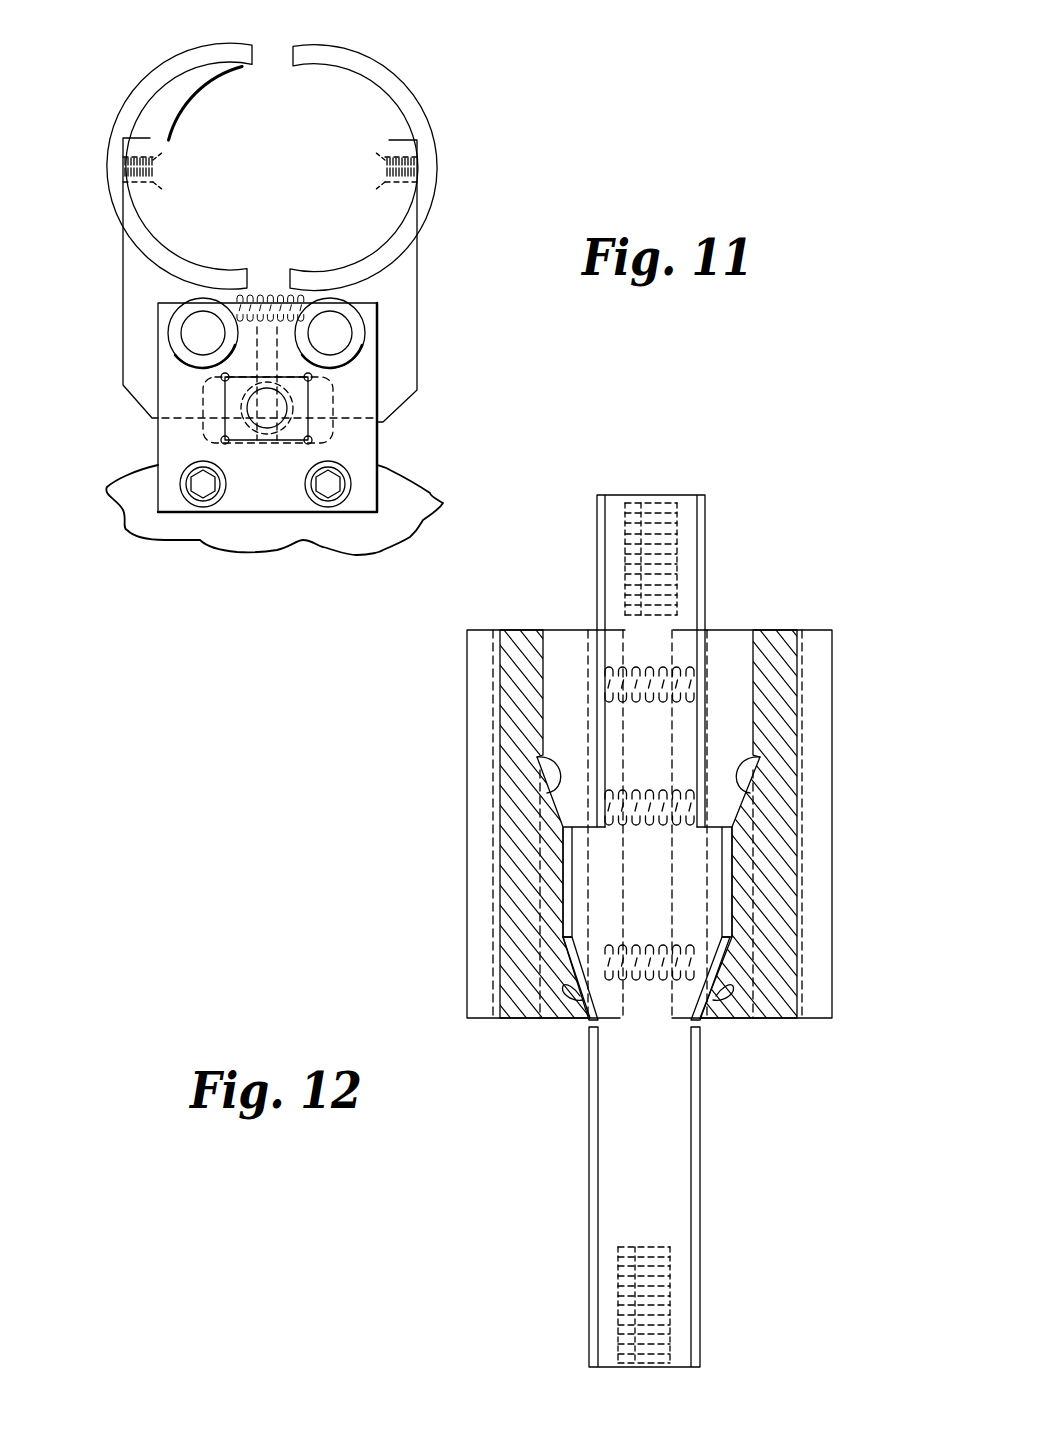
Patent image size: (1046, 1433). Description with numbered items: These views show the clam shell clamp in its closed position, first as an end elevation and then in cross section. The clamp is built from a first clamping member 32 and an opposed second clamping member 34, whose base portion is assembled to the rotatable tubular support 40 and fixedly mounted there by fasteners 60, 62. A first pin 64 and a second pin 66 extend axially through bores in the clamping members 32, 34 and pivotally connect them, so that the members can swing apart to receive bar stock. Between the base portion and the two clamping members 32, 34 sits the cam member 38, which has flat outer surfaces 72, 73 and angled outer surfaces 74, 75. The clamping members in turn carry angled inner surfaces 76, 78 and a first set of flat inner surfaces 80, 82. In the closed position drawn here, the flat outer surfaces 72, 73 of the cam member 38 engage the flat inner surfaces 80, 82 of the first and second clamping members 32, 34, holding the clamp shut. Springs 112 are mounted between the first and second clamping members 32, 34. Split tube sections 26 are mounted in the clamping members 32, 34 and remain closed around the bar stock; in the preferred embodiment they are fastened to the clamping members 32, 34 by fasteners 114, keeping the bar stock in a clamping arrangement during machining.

In FIG. 11, the split tube sections 26 is at (330, 58).
In FIG. 11, the first clamping member 32 is at (138, 252).
In FIG. 12, the first clamping member 32 is at (455, 892).
In FIG. 11, the second clamping member 34 is at (407, 245).
In FIG. 12, the second clamping member 34 is at (845, 855).
In FIG. 11, the cam member 38 is at (207, 392).
In FIG. 12, the cam member 38 is at (716, 573).
In FIG. 11, the rotatable tubular support 40 is at (410, 498).
In FIG. 11, the fastener 60 is at (215, 500).
In FIG. 11, the fastener 62 is at (337, 500).
In FIG. 11, the first pin 64 is at (168, 333).
In FIG. 11, the second pin 66 is at (365, 330).
In FIG. 12, the flat outer surface 72 is at (563, 890).
In FIG. 12, the flat outer surface 73 is at (732, 888).
In FIG. 12, the angled outer surface 74 is at (576, 998).
In FIG. 12, the angled outer surface 75 is at (722, 998).
In FIG. 12, the angled inner surface 76 is at (560, 760).
In FIG. 12, the angled inner surface 78 is at (762, 757).
In FIG. 12, the flat inner surface 80 is at (583, 995).
In FIG. 12, the flat inner surface 82 is at (713, 995).
In FIG. 11, the springs 112 is at (275, 293).
In FIG. 11, the fasteners 114 is at (417, 175).